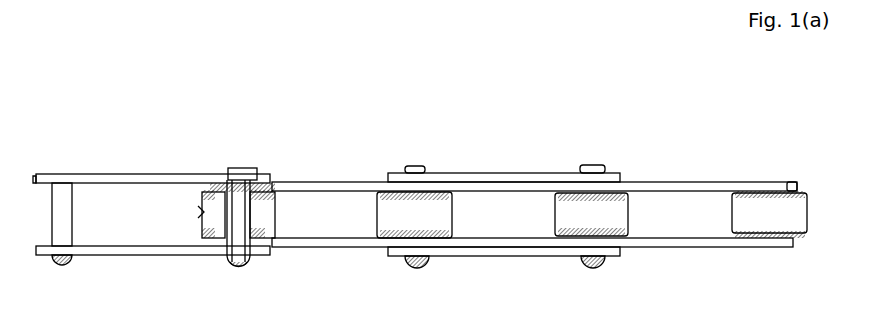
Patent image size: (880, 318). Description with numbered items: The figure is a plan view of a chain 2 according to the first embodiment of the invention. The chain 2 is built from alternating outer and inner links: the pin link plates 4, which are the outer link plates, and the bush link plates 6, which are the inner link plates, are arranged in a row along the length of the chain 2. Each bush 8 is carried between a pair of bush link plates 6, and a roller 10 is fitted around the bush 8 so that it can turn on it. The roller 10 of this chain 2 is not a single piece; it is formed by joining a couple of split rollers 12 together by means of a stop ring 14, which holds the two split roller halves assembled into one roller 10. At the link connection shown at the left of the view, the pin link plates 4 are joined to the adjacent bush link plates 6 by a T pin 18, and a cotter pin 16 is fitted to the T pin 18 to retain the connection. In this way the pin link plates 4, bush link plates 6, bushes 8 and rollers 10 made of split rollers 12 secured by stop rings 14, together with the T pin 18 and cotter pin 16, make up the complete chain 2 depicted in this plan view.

The chain 2 is at (545, 138).
The pin link plate 4 is at (83, 174).
The bush link plate 6 is at (370, 183).
The bush 8 is at (213, 190).
The roller 10 is at (198, 212).
The split roller 12 is at (277, 218).
The stop ring 14 is at (262, 232).
The cotter pin 16 is at (237, 178).
The T pin 18 is at (227, 257).